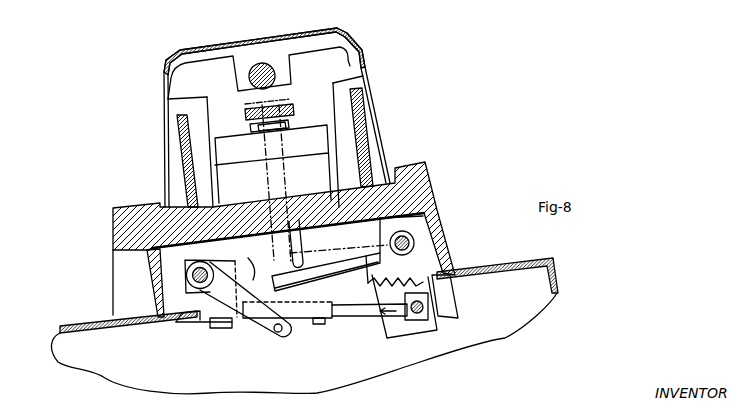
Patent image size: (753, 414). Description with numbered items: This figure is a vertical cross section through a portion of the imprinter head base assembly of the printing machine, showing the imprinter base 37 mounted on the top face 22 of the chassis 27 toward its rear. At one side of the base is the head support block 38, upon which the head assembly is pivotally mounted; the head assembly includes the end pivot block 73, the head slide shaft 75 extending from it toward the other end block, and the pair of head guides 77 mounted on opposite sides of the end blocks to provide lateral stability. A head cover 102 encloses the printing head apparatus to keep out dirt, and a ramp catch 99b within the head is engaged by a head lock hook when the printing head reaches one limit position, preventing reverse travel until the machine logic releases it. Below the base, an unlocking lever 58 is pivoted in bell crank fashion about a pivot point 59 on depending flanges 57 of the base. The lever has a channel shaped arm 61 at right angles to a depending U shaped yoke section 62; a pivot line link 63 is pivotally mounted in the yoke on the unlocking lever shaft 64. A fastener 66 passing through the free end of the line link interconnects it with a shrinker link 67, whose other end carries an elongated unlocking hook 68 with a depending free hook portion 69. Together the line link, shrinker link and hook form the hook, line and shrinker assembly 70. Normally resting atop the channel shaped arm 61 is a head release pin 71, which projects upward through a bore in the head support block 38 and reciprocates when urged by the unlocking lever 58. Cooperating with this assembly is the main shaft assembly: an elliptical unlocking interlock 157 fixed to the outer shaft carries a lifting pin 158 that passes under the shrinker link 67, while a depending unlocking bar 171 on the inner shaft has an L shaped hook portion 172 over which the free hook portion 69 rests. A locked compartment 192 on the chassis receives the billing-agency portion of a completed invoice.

The locked compartment 192 is at (249, 106).
The head cover 102 is at (265, 38).
The end pivot block 73 is at (240, 58).
The head slide shaft 75 is at (272, 78).
The head guides 77 is at (180, 140).
The head support block 38 is at (246, 156).
The ramp catch 99b is at (307, 108).
The imprinter base 37 is at (432, 187).
The depending flanges 57 is at (418, 226).
The pivot point 59 is at (414, 243).
The chassis 27 is at (513, 261).
The top face 22 is at (77, 326).
The hook, line and shrinker assembly 70 is at (316, 370).
The head release pin 71 is at (300, 240).
The channel shaped arm 61 is at (327, 263).
The unlocking lever 58 is at (376, 256).
The unlocking interlock 157 is at (251, 259).
The unlocking bar 171 is at (230, 263).
The free hook portion 69 is at (203, 322).
The L shaped hook portion 172 is at (217, 330).
The unlocking hook 68 is at (227, 325).
The lifting pin 158 is at (285, 337).
The shrinker link 67 is at (297, 316).
The fastener 66 is at (333, 322).
The pivot line link 63 is at (363, 318).
The U shaped yoke section 62 is at (408, 330).
The unlocking lever shaft 64 is at (450, 320).